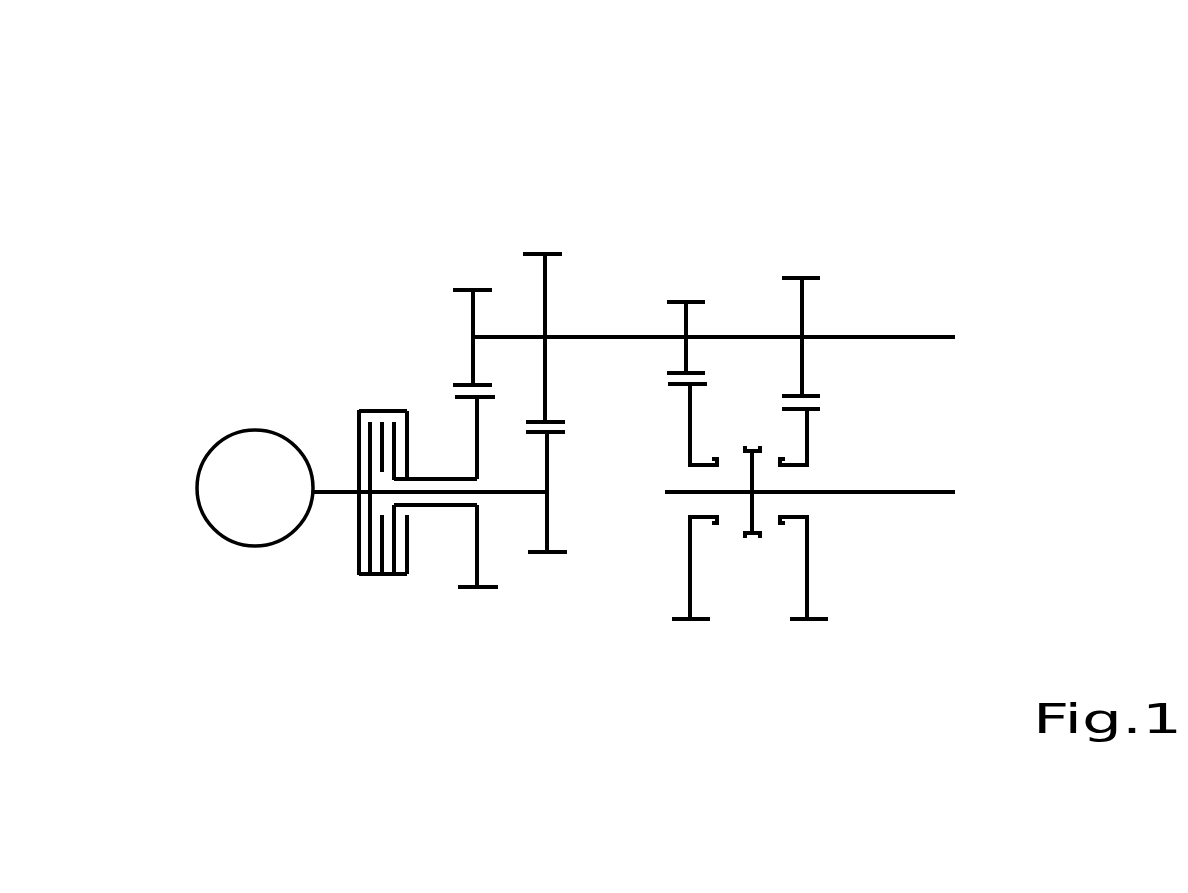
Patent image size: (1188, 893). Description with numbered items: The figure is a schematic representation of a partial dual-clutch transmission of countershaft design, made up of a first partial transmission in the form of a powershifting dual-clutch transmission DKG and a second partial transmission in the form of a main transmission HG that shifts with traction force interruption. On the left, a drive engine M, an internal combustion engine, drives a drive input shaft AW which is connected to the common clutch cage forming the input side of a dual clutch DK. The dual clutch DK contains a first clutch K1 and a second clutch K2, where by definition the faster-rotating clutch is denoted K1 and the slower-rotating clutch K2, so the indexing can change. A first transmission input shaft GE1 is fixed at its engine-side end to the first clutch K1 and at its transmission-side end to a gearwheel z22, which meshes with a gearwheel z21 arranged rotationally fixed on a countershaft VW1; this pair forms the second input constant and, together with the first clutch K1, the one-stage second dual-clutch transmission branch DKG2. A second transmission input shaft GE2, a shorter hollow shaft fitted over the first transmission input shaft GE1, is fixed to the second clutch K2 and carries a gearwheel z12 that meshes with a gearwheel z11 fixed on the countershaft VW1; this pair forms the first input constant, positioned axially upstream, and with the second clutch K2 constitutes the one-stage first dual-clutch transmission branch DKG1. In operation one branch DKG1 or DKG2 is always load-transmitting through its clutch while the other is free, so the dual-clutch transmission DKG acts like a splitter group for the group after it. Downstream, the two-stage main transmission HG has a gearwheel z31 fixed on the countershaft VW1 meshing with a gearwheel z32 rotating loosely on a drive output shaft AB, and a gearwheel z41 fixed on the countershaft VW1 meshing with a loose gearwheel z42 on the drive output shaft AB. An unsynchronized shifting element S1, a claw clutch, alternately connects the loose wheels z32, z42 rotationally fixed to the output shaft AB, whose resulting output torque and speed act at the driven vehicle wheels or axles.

The drive engine M is at (249, 547).
The drive input shaft AW is at (335, 490).
The dual clutch DK is at (357, 577).
The first clutch K1 is at (370, 577).
The second clutch K2 is at (393, 577).
The first transmission input shaft GE1 is at (425, 479).
The second transmission input shaft GE2 is at (449, 479).
The dual-clutch transmission DKG is at (434, 372).
The first dual-clutch transmission branch DKG1 is at (452, 378).
The second dual-clutch transmission branch DKG2 is at (557, 378).
The gearwheel z11 is at (483, 290).
The gearwheel z12 is at (463, 589).
The gearwheel z21 is at (556, 254).
The gearwheel z22 is at (540, 556).
The countershaft VW1 is at (860, 338).
The main transmission HG is at (757, 375).
The gearwheel z31 is at (697, 302).
The gearwheel z32 is at (683, 622).
The gearwheel z41 is at (812, 278).
The gearwheel z42 is at (800, 622).
The shifting element S1 is at (757, 540).
The drive output shaft AB is at (860, 495).